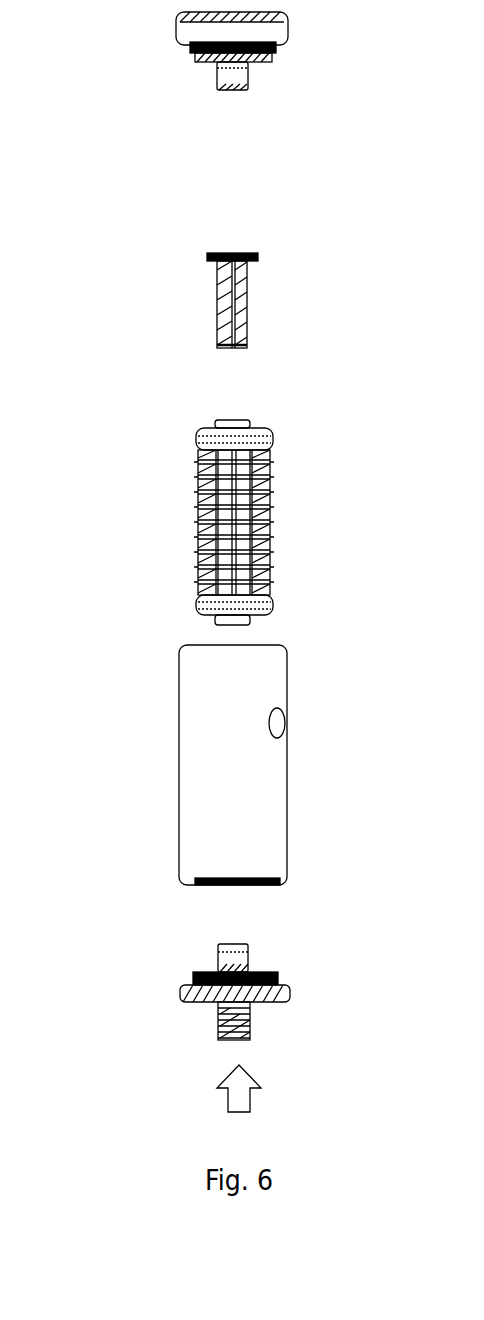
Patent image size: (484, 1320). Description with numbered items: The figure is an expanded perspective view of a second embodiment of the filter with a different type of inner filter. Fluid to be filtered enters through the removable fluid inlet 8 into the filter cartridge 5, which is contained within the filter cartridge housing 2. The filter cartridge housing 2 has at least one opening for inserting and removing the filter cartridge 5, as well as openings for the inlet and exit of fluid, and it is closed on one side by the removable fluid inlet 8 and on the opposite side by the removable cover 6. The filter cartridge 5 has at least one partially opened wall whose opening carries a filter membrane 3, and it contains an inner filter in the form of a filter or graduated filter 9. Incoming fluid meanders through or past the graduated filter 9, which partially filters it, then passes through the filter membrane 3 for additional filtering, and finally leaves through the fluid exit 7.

The filter cartridge housing 2 is at (221, 765).
The filter membrane 3 is at (166, 522).
The filter cartridge 5 is at (195, 523).
The removable cover 6 is at (205, 30).
The fluid exit 7 is at (283, 720).
The removable fluid inlet 8 is at (185, 990).
The graduated filter 9 is at (215, 318).